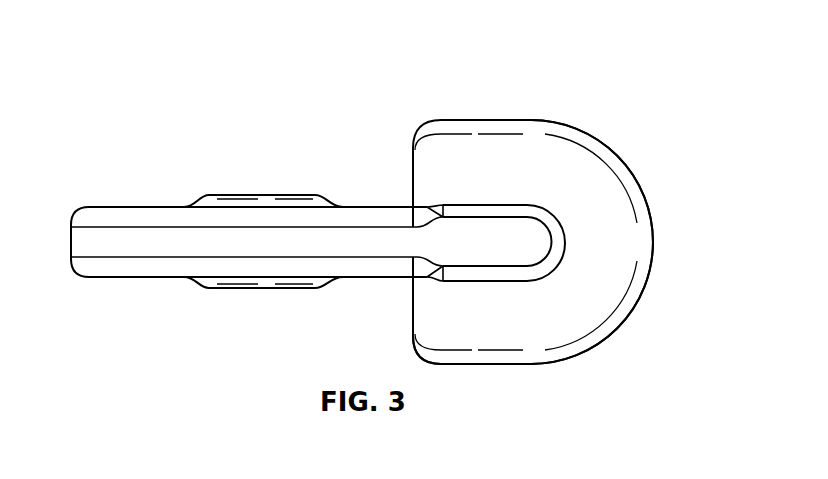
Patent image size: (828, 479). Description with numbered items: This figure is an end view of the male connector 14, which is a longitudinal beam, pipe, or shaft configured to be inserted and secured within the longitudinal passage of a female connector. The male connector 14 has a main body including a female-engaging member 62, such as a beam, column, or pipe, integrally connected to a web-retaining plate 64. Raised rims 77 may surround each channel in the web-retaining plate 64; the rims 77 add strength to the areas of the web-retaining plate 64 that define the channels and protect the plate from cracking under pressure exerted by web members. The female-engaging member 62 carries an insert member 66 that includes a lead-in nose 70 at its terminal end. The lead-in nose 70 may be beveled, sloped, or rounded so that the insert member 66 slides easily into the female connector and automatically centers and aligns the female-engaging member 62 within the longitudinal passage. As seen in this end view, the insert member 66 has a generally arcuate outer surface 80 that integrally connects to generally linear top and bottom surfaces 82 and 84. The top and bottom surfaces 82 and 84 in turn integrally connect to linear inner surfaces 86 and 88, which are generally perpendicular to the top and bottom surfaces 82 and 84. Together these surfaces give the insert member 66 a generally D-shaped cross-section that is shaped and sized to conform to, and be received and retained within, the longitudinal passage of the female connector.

The male connector 14 is at (126, 86).
The female-engaging member 62 is at (536, 119).
The web-retaining plate 64 is at (117, 279).
The insert member 66 is at (592, 138).
The lead-in nose 70 is at (532, 245).
The raised rims 77 is at (216, 195).
The arcuate outer surface 80 is at (650, 276).
The top surface 82 is at (493, 110).
The bottom surface 84 is at (500, 365).
The inner surface 86 is at (404, 166).
The inner surface 88 is at (412, 315).